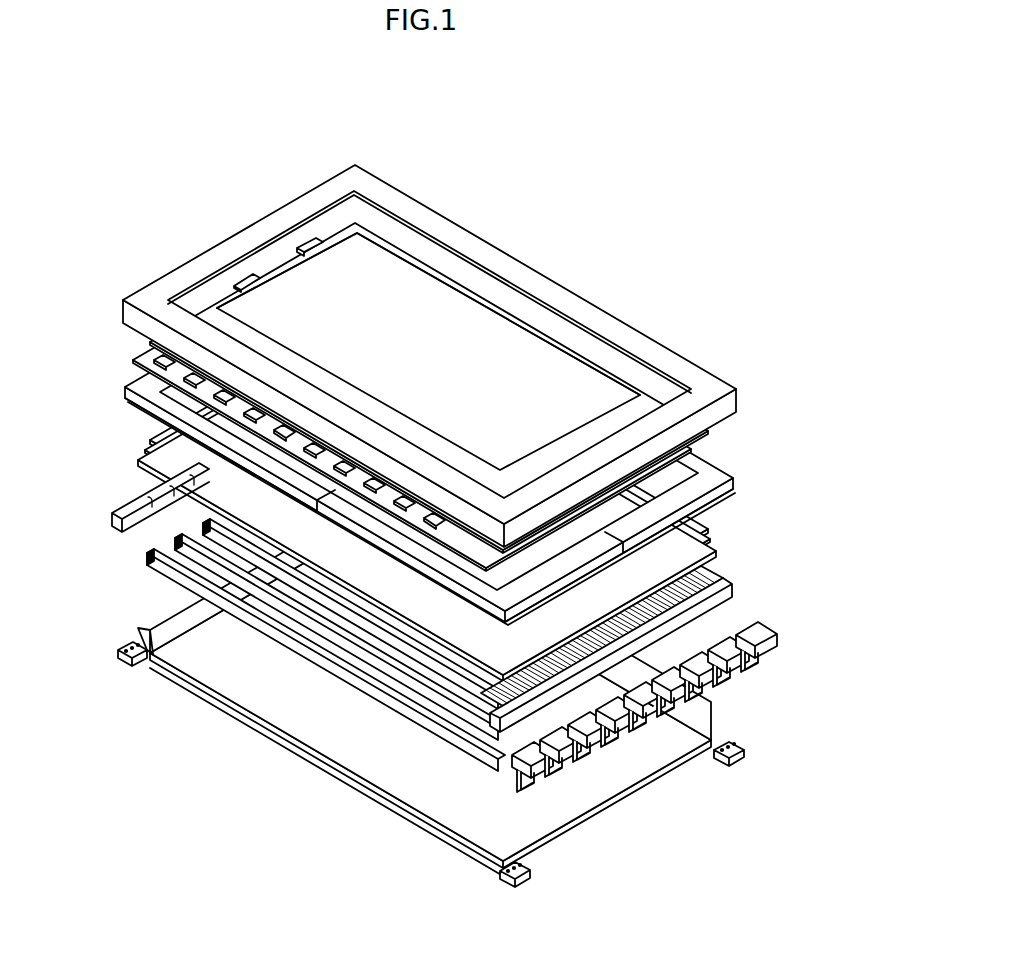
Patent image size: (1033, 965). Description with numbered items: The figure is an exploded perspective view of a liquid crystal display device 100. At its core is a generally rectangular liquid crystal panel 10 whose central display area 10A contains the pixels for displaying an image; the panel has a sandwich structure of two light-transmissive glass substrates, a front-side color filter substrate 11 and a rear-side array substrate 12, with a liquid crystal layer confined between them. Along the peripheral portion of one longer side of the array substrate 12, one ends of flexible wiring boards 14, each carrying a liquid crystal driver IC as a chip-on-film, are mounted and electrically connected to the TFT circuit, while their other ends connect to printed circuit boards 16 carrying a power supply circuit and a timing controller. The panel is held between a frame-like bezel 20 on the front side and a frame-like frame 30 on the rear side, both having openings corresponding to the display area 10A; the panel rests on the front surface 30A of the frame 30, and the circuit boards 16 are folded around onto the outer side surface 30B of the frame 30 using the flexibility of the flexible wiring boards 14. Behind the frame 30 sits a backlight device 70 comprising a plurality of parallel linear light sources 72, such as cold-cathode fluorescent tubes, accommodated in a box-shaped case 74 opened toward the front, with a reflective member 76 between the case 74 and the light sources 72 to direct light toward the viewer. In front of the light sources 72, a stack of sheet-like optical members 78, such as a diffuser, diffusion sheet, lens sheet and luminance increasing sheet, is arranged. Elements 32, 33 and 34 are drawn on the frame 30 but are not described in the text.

The liquid crystal display device 100 is at (682, 176).
The liquid crystal panel 10 is at (536, 347).
The display area 10A is at (418, 357).
The color filter substrate 11 is at (400, 238).
The array substrate 12 is at (378, 218).
The flexible wiring board 14 is at (160, 386).
The printed circuit board 16 is at (152, 413).
The bezel 20 is at (680, 350).
The frame 30 is at (350, 549).
The front surface 30A is at (733, 480).
The outer side surface 30B is at (147, 390).
The side wall of mold frame 32 is at (135, 402).
The support portion of mold frame 33 is at (471, 604).
The step portion of mold frame 34 is at (732, 459).
The backlight device 70 is at (749, 711).
The light source 72 is at (182, 560).
The case 74 is at (655, 776).
The reflective member 76 is at (588, 793).
The optical members 78 is at (745, 508).